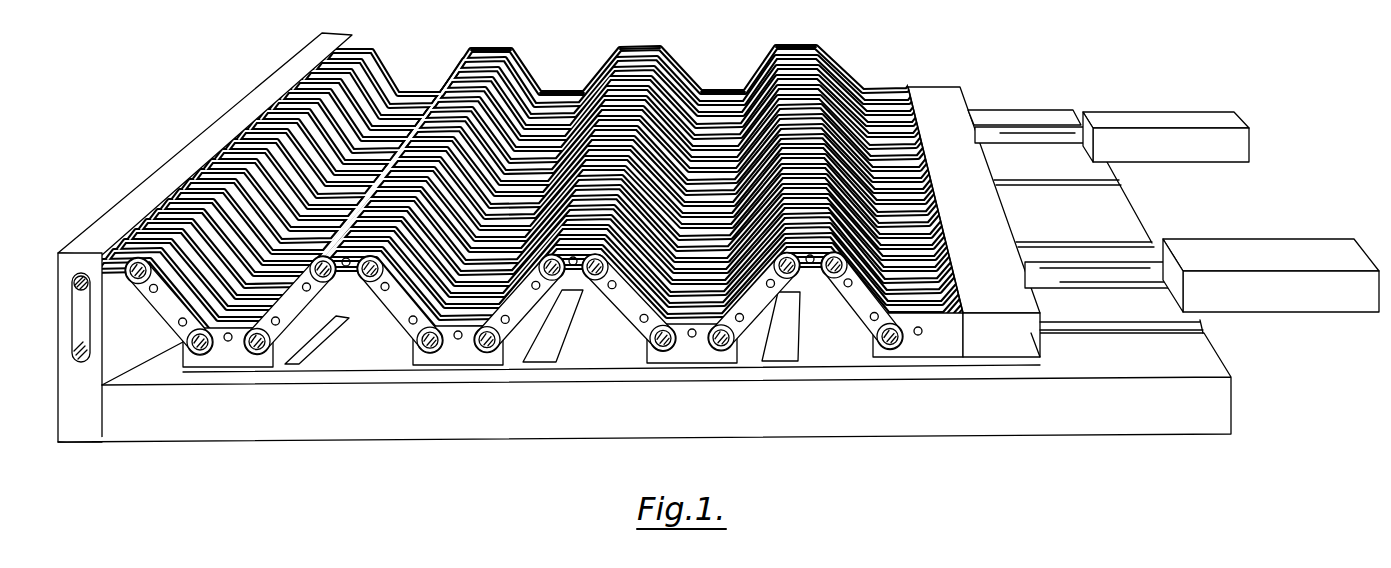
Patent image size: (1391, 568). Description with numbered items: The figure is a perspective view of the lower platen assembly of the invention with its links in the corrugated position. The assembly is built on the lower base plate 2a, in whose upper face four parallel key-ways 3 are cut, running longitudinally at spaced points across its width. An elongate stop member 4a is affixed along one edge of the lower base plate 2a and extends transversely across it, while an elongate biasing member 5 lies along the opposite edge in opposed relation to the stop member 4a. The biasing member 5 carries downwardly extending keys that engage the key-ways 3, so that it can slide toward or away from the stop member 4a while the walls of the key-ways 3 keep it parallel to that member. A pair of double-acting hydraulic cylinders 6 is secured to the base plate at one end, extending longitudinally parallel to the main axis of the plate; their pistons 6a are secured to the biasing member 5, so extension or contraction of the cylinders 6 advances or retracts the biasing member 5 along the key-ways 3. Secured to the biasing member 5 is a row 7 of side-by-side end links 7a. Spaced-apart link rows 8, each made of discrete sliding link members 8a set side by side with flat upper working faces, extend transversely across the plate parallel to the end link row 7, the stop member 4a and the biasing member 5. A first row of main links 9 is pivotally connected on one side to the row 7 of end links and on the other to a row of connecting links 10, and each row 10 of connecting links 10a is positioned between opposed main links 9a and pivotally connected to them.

The lower base plate 2a is at (700, 224).
The key-ways 3 is at (1115, 181).
The stop member 4a is at (62, 358).
The biasing member 5 is at (1015, 349).
The double-acting hydraulic cylinders 6 is at (1223, 152).
The pistons 6a is at (1102, 268).
The row of end links 7 is at (938, 344).
The end links 7a is at (930, 204).
The link rows 8 is at (236, 355).
The sliding link members 8a is at (728, 90).
The row of main links 9 is at (373, 74).
The main links 9a is at (538, 94).
The row of connecting links 10 is at (506, 24).
The connecting links 10a is at (802, 48).